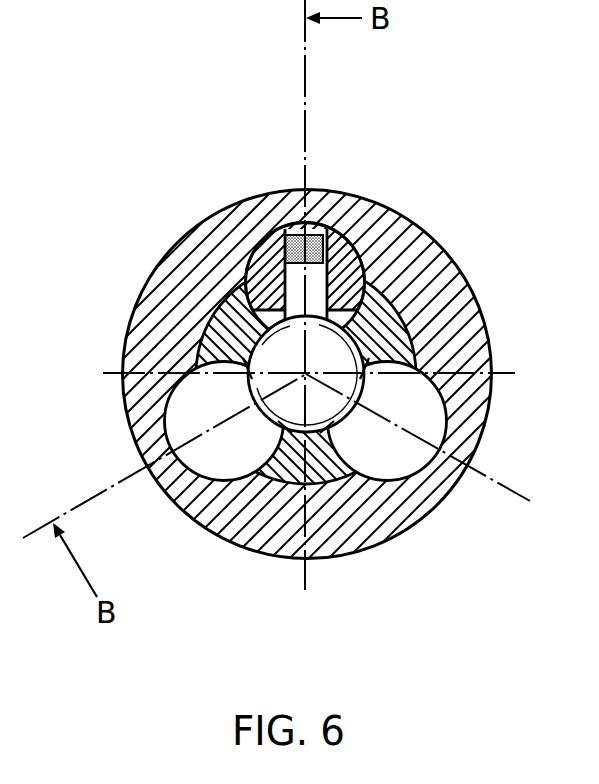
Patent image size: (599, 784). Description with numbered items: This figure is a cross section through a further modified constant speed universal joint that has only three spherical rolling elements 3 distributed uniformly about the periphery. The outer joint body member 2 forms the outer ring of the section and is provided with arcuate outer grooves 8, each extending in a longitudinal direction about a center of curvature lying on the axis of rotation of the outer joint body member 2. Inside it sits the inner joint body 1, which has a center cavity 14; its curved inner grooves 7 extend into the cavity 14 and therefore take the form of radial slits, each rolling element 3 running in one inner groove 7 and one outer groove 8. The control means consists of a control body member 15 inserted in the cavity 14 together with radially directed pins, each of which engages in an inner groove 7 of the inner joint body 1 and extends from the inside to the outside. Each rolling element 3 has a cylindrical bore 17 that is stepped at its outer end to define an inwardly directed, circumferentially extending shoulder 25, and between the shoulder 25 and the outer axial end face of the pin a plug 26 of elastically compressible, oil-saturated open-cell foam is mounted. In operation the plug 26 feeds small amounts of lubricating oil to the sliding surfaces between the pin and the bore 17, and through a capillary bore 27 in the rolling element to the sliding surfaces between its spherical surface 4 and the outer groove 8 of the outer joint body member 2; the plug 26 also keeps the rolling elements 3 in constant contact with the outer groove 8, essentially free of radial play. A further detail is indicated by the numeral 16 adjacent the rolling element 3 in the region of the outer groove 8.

The inner joint body 1 is at (445, 270).
The outer joint body member 2 is at (178, 313).
The rolling element 3 is at (200, 393).
The spherical surface 4 is at (367, 283).
The inner groove 7 is at (383, 325).
The outer groove 8 is at (406, 466).
The center cavity 14 is at (182, 306).
The control body member 15 is at (293, 403).
The insert body 16 is at (365, 228).
The cylindrical bore 17 is at (262, 240).
The shoulder 25 is at (288, 238).
The plug 26 is at (325, 232).
The capillary bore 27 is at (304, 230).